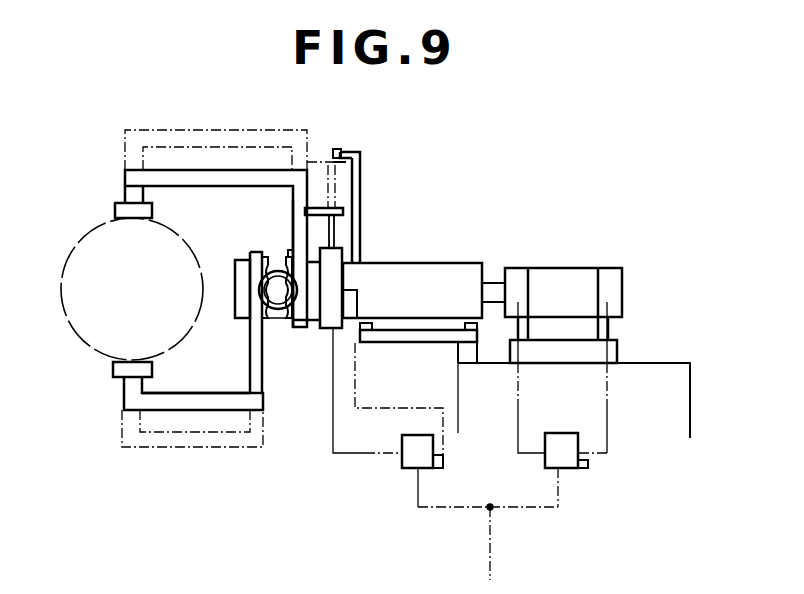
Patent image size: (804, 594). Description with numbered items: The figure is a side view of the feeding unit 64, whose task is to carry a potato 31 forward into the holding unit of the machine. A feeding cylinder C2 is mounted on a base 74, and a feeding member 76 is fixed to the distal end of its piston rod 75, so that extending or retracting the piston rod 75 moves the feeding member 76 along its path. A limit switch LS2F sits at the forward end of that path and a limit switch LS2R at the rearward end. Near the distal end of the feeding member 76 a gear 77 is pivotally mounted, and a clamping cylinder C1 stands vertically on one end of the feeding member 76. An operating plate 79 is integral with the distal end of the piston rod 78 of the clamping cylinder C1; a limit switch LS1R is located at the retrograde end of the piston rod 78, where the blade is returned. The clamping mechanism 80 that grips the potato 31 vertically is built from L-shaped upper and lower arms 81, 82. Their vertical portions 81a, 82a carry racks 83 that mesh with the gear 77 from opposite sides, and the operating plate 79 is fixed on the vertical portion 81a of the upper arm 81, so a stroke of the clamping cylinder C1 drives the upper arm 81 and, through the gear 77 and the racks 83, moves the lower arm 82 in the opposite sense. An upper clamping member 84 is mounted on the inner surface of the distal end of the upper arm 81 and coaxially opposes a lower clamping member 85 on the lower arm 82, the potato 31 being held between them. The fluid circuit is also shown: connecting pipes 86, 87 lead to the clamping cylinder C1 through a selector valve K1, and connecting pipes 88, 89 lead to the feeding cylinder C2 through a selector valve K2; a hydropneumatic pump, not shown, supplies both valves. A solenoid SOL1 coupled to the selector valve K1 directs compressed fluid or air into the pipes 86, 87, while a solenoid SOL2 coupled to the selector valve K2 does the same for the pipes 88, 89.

The clamping mechanism 80 is at (100, 177).
The upper arm 81 is at (175, 170).
The vertical portion of upper arm 81a is at (292, 201).
The lower arm 82 is at (180, 412).
The vertical portion of lower arm 82a is at (250, 350).
The upper clamping member 84 is at (115, 212).
The lower clamping member 85 is at (113, 367).
The potato 31 is at (65, 317).
The gear 77 is at (276, 257).
The racks 83 is at (276, 320).
The operating plate 79 is at (343, 208).
The piston rod 78 is at (334, 232).
The feeding member 76 is at (440, 263).
The piston rod 75 is at (492, 283).
The base 74 is at (672, 363).
The feeding unit 64 is at (475, 195).
The connecting pipe 86 is at (332, 390).
The connecting pipe 87 is at (355, 390).
The connecting pipe 88 is at (607, 420).
The connecting pipe 89 is at (518, 428).
The limit switch LS1R is at (340, 150).
The limit switch LS2F is at (418, 350).
The limit switch LS2R is at (485, 359).
The clamping cylinder C1 is at (343, 250).
The feeding cylinder C2 is at (608, 268).
The selector valve K1 is at (400, 463).
The selector valve K2 is at (568, 470).
The solenoid SOL1 is at (440, 463).
The solenoid SOL2 is at (588, 465).